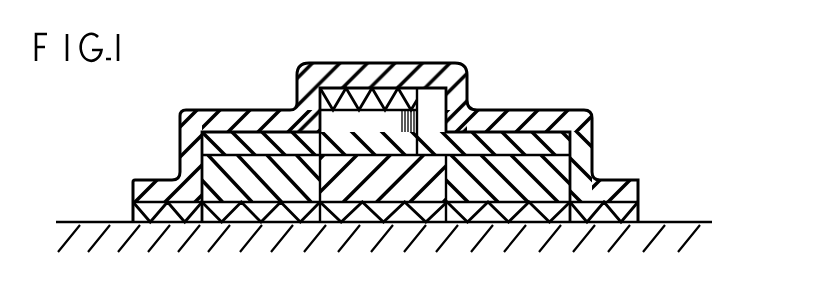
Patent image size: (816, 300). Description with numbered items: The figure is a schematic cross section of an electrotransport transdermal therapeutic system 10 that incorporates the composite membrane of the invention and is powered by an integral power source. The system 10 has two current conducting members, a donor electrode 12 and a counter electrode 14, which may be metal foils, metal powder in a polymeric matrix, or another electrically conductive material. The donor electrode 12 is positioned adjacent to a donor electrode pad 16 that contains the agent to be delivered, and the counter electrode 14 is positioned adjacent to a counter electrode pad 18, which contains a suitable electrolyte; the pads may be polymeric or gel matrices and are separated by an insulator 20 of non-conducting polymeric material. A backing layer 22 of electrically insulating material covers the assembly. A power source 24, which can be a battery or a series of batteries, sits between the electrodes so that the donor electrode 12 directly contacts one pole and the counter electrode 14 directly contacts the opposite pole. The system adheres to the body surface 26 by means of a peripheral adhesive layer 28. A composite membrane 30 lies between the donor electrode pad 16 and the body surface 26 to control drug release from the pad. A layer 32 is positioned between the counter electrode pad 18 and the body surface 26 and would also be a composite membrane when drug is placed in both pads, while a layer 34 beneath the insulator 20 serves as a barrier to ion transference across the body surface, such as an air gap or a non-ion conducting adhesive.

The electrotransport system 10 is at (605, 59).
The donor electrode 12 is at (250, 140).
The counter electrode 14 is at (523, 140).
The donor electrode pad 16 is at (235, 205).
The counter electrode pad 18 is at (550, 190).
The insulator 20 is at (367, 188).
The backing layer 22 is at (373, 72).
The power source 24 is at (438, 64).
The body surface 26 is at (82, 222).
The peripheral adhesive layer 28 is at (137, 212).
The composite membrane 30 is at (297, 210).
The layer 32 is at (507, 210).
The barrier layer 34 is at (410, 213).